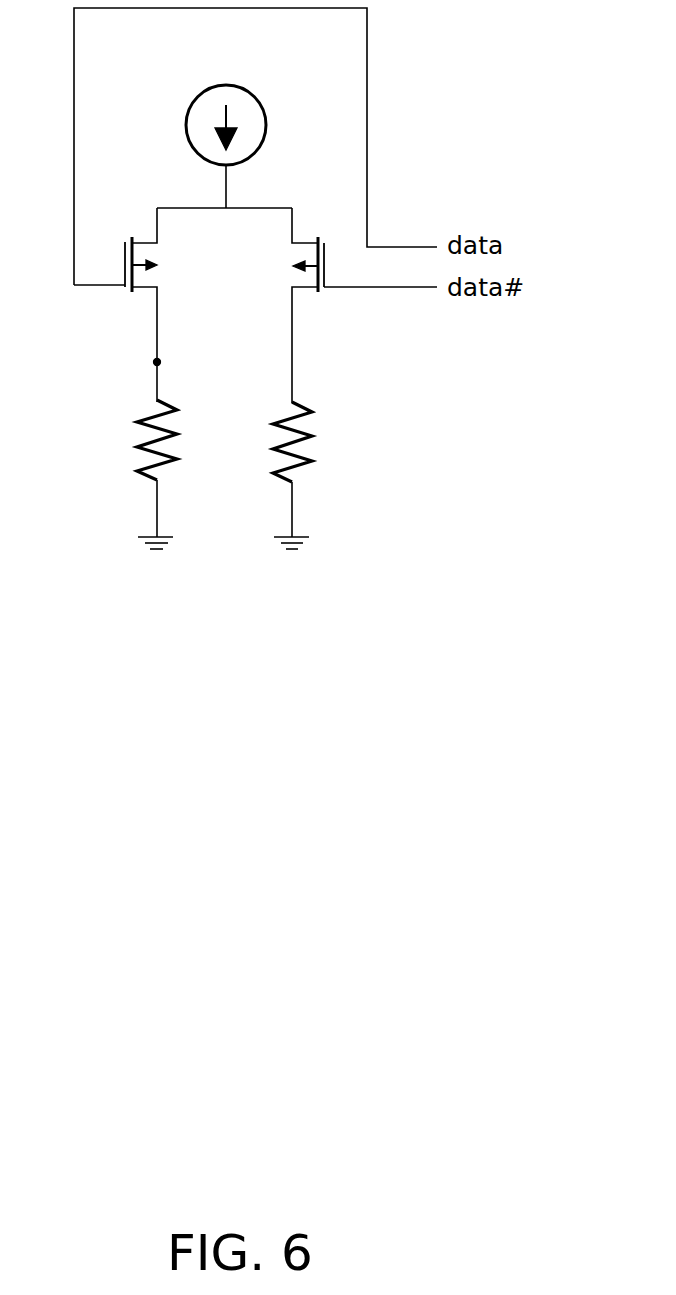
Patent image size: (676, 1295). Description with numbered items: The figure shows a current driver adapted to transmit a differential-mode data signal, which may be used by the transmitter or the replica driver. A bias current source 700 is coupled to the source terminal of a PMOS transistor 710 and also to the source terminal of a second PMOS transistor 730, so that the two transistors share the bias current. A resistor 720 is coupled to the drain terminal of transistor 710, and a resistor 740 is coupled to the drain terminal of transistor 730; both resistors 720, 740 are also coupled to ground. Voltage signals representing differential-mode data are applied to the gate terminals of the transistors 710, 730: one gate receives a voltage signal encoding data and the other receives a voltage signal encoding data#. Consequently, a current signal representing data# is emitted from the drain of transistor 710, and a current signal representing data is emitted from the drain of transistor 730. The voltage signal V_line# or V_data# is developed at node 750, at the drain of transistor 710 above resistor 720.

The bias current source 700 is at (225, 85).
The PMOS transistor 710 is at (176, 285).
The resistor 720 is at (126, 474).
The PMOS transistor 730 is at (332, 305).
The resistor 740 is at (328, 475).
The node 750 is at (192, 371).